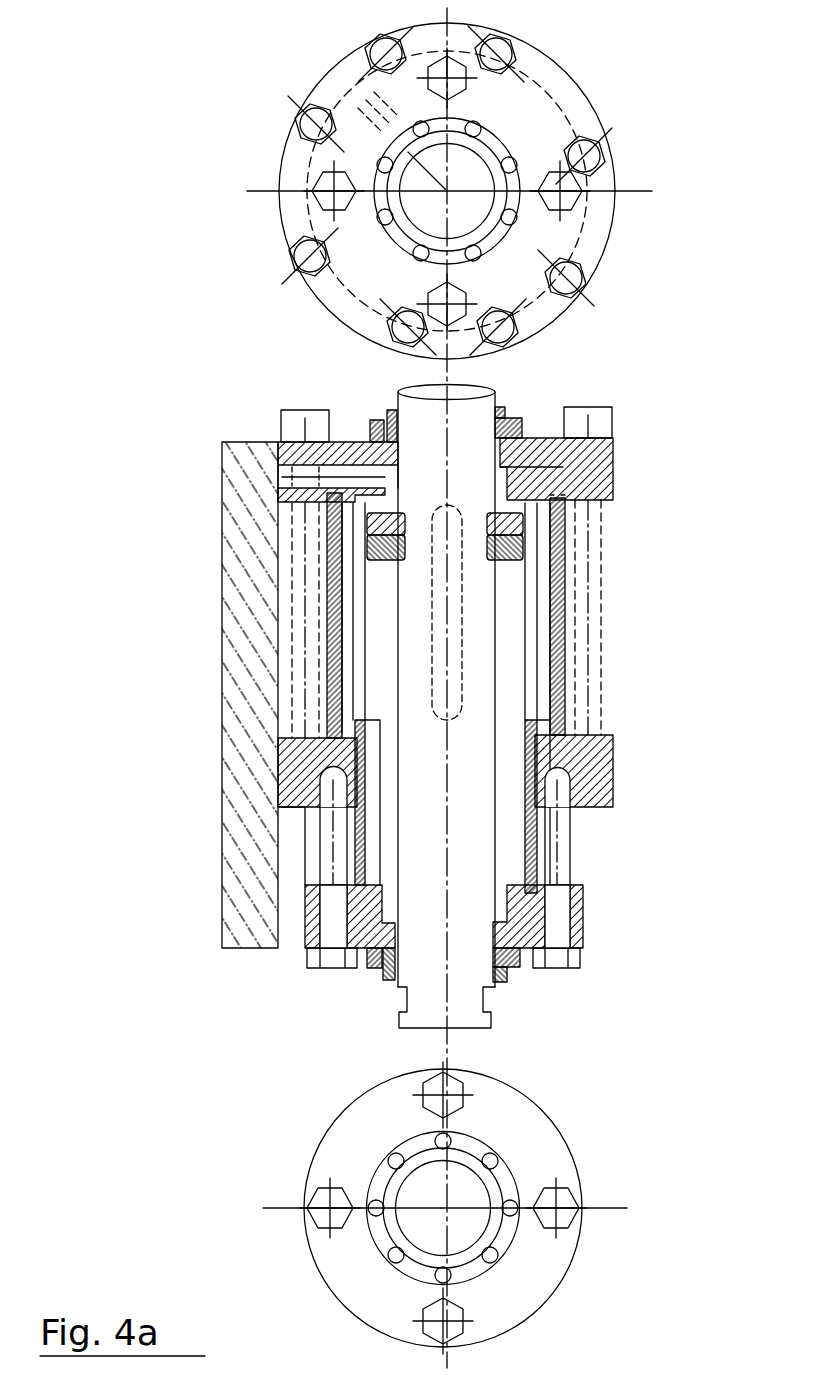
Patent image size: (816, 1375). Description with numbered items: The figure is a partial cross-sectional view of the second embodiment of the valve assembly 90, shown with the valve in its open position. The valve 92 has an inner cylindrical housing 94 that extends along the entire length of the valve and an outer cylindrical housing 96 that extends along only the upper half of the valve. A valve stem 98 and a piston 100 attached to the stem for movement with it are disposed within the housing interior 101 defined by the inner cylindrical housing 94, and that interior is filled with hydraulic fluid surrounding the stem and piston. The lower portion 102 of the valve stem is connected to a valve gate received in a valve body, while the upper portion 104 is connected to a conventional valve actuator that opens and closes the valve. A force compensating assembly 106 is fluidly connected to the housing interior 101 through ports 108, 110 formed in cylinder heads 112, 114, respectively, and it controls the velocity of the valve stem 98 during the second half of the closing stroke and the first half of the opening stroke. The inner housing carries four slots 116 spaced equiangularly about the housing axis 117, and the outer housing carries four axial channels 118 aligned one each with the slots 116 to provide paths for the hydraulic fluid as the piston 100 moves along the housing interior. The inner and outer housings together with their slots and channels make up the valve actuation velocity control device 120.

The valve assembly 90 is at (560, 390).
The valve 92 is at (594, 941).
The inner cylindrical housing 94 is at (532, 833).
The outer cylindrical housing 96 is at (563, 685).
The valve stem 98 is at (440, 902).
The piston 100 is at (527, 552).
The housing interior 101 is at (383, 713).
The lower portion of the valve stem 102 is at (380, 1000).
The upper portion of the valve stem 104 is at (515, 383).
The force compensating assembly 106 is at (267, 935).
The port 108 is at (363, 900).
The port 110 is at (363, 470).
The cylinder head 112 is at (525, 940).
The cylinder head 114 is at (613, 445).
The slots 116 is at (362, 655).
The housing axis 117 is at (443, 867).
The axial channels 118 is at (347, 593).
The valve actuation velocity control device 120 is at (580, 545).